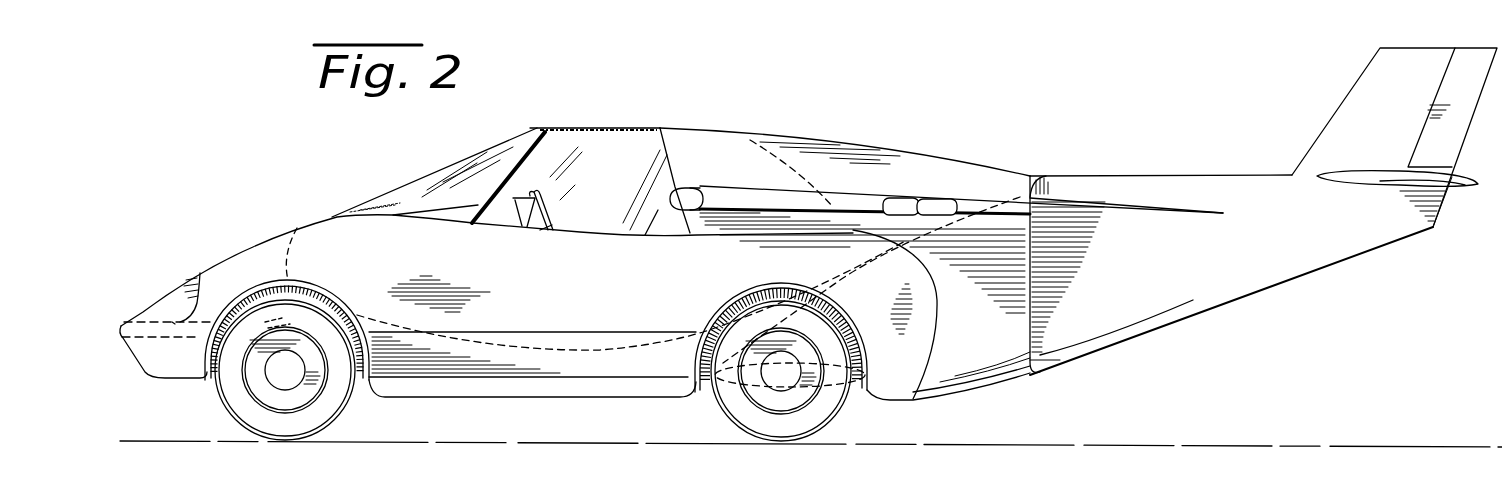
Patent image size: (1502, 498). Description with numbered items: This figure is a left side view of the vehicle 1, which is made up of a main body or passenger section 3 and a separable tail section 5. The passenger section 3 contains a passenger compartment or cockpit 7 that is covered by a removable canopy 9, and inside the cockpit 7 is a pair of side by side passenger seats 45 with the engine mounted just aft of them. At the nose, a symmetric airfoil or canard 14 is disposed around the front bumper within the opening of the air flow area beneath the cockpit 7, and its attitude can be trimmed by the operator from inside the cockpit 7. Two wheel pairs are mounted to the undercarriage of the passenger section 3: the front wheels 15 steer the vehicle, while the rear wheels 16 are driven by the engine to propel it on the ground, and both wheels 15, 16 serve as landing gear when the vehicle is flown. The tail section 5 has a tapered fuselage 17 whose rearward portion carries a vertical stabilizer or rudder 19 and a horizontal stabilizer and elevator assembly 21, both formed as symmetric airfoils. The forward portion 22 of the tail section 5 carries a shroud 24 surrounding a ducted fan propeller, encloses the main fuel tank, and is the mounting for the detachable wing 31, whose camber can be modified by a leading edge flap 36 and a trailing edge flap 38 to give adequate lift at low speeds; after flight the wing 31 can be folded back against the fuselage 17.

The vehicle 1 is at (338, 183).
The main body or passenger section 3 is at (250, 240).
The separable tail section 5 is at (1257, 283).
The passenger compartment or cockpit 7 is at (470, 160).
The removable canopy 9 is at (565, 127).
The symmetric airfoil or canard 14 is at (172, 322).
The front wheels 15 is at (247, 425).
The rear wheels 16 is at (820, 415).
The tapered fuselage 17 is at (1199, 175).
The vertical stabilizer or rudder 19 is at (1360, 85).
The horizontal stabilizer and elevator assembly 21 is at (1398, 182).
The forward portion of tail section 22 is at (912, 152).
The shroud 24 is at (1030, 285).
The wing 31 is at (818, 190).
The leading edge flap 36 is at (720, 190).
The trailing edge flap 38 is at (955, 203).
The passenger seats 45 is at (655, 205).